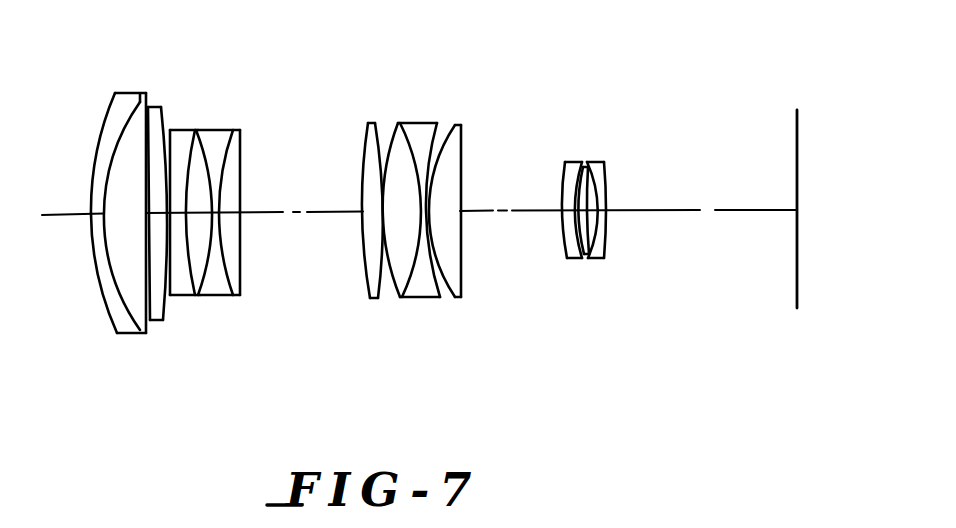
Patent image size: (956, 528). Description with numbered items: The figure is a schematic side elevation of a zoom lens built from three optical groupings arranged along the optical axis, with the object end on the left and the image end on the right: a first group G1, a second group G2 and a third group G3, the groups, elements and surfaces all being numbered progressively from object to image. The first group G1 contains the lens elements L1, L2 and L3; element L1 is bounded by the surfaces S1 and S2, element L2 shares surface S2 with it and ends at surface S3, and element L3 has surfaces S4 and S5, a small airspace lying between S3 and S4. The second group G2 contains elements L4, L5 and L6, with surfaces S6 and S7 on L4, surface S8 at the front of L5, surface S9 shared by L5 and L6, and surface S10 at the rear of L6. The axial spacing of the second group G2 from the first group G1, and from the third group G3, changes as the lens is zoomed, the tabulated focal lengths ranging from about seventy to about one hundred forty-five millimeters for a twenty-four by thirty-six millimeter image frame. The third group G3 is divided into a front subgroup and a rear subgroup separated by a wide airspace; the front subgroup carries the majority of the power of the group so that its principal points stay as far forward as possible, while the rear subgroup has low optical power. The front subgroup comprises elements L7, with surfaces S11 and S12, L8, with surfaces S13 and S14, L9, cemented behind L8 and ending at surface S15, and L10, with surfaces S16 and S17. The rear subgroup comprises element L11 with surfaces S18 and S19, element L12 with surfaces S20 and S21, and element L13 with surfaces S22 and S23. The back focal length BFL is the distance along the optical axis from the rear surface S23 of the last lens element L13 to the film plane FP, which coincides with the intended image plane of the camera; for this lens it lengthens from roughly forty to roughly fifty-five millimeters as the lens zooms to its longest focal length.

The first lens group G1 is at (173, 70).
The second lens group G2 is at (255, 70).
The third lens group G3 is at (628, 70).
The first lens element L1 is at (113, 104).
The second lens element L2 is at (144, 108).
The third lens element L3 is at (162, 117).
The fourth lens element L4 is at (186, 134).
The fifth lens element L5 is at (225, 133).
The sixth lens element L6 is at (237, 152).
The seventh lens element L7 is at (368, 117).
The eighth lens element L8 is at (400, 143).
The ninth lens element L9 is at (430, 132).
The tenth lens element L10 is at (458, 147).
The eleventh lens element L11 is at (567, 160).
The twelfth lens element L12 is at (583, 180).
The thirteenth lens element L13 is at (607, 175).
The lens surface S1 is at (98, 285).
The lens surface S2 is at (128, 300).
The lens surface S3 is at (143, 300).
The lens surface S4 is at (158, 312).
The lens surface S5 is at (176, 309).
The lens surface S6 is at (187, 290).
The lens surface S7 is at (207, 275).
The lens surface S8 is at (230, 297).
The lens surface S9 is at (228, 264).
The lens surface S10 is at (243, 236).
The lens surface S11 is at (370, 290).
The lens surface S12 is at (377, 300).
The lens surface S13 is at (390, 292).
The lens surface S14 is at (427, 295).
The lens surface S15 is at (442, 293).
The lens surface S16 is at (440, 260).
The lens surface S17 is at (462, 225).
The lens surface S18 is at (566, 250).
The lens surface S19 is at (568, 250).
The lens surface S20 is at (588, 243).
The lens surface S21 is at (590, 230).
The lens surface S22 is at (601, 225).
The lens surface S23 is at (612, 195).
The back focal length BFL is at (753, 199).
The film plane FP is at (800, 177).